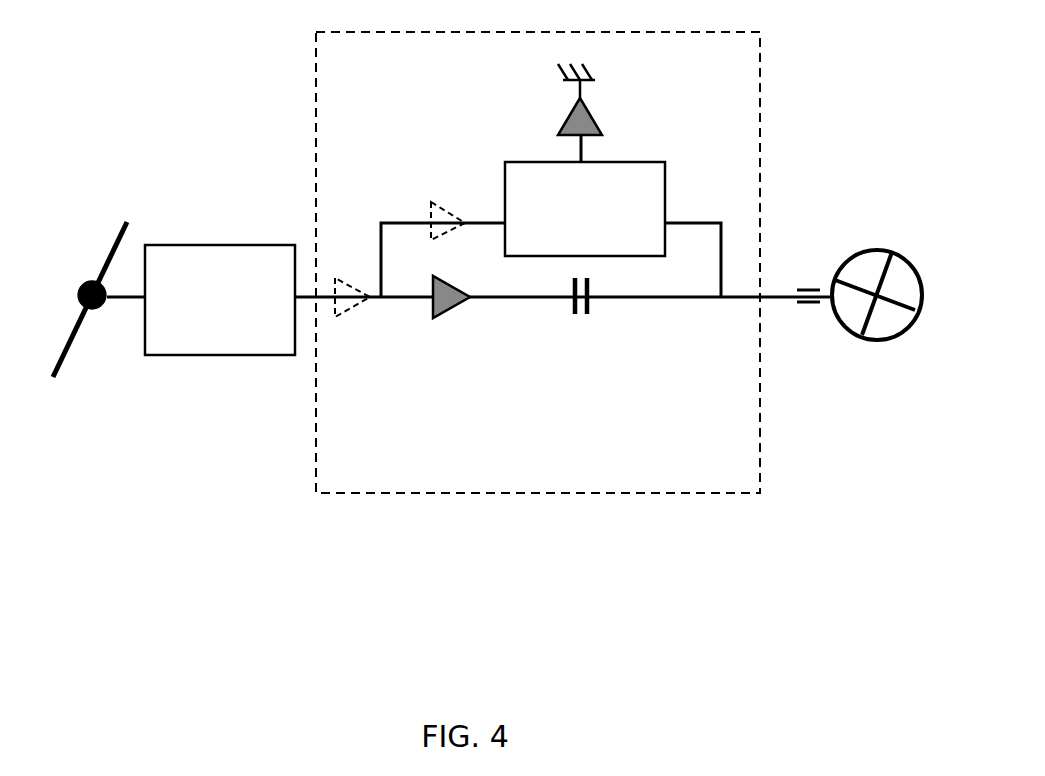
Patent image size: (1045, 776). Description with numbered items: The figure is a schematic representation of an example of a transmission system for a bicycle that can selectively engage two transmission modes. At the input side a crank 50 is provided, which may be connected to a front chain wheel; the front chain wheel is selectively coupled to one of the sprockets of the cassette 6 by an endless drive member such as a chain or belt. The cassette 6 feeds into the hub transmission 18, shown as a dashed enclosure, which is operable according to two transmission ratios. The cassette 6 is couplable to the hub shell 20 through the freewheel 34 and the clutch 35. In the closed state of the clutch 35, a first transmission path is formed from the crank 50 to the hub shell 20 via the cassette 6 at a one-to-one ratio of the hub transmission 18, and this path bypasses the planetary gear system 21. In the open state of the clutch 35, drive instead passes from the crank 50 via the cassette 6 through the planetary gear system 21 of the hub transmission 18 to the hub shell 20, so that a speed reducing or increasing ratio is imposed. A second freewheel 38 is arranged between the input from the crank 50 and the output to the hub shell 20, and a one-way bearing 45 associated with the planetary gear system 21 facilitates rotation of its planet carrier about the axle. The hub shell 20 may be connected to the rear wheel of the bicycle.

The cassette 6 is at (220, 300).
The hub transmission 18 is at (498, 500).
The hub shell 20 is at (879, 234).
The planetary gear system 21 is at (585, 209).
The freewheel 34 is at (449, 323).
The clutch 35 is at (577, 330).
The second freewheel 38 is at (444, 189).
The one-way bearing 45 is at (604, 107).
The crank 50 is at (106, 230).